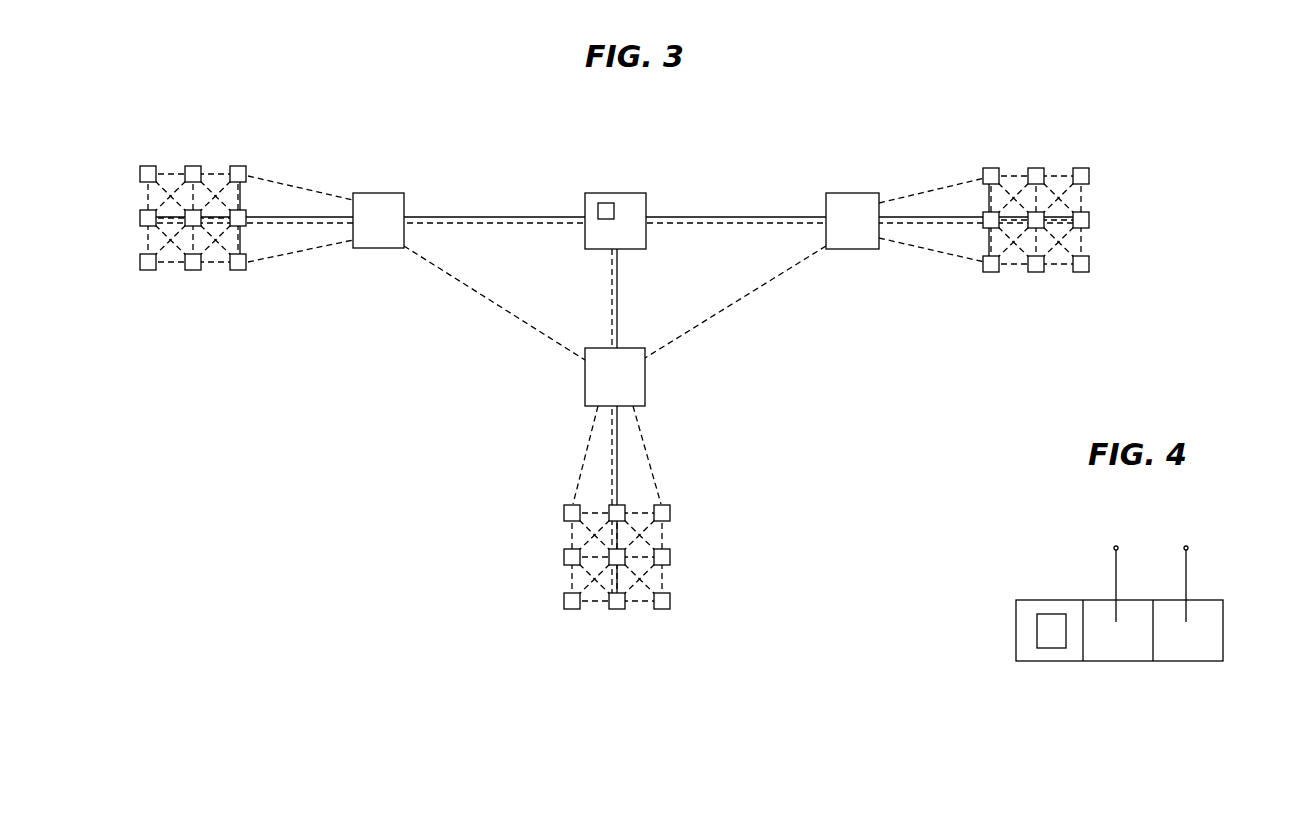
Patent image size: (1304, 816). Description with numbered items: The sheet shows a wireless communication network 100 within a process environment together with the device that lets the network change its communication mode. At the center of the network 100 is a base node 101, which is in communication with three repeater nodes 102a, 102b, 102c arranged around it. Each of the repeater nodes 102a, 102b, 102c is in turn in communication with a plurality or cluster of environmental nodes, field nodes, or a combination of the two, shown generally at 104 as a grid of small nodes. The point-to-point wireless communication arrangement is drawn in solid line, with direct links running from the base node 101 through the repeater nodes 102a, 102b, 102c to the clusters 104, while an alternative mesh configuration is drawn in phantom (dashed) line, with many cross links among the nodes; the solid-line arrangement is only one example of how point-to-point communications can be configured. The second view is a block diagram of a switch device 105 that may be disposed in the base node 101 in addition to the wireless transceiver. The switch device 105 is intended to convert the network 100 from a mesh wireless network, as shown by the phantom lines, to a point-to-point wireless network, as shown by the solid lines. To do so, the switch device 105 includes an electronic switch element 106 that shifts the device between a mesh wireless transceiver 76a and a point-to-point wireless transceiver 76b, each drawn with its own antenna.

In FIG. 3, the network 100 is at (612, 145).
In FIG. 3, the base node 101 is at (638, 193).
In FIG. 3, the repeater node 102a is at (383, 193).
In FIG. 3, the repeater node 102b is at (633, 348).
In FIG. 3, the repeater node 102c is at (858, 193).
In FIG. 3, the cluster of environmental nodes or field nodes 104 is at (250, 264).
In FIG. 3, the switch device 105 is at (605, 203).
In FIG. 4, the switch device 105 is at (1055, 572).
In FIG. 4, the electronic switch element 106 is at (1037, 628).
In FIG. 4, the mesh wireless transceiver 76a is at (1117, 565).
In FIG. 4, the point-to-point wireless transceiver 76b is at (1188, 565).